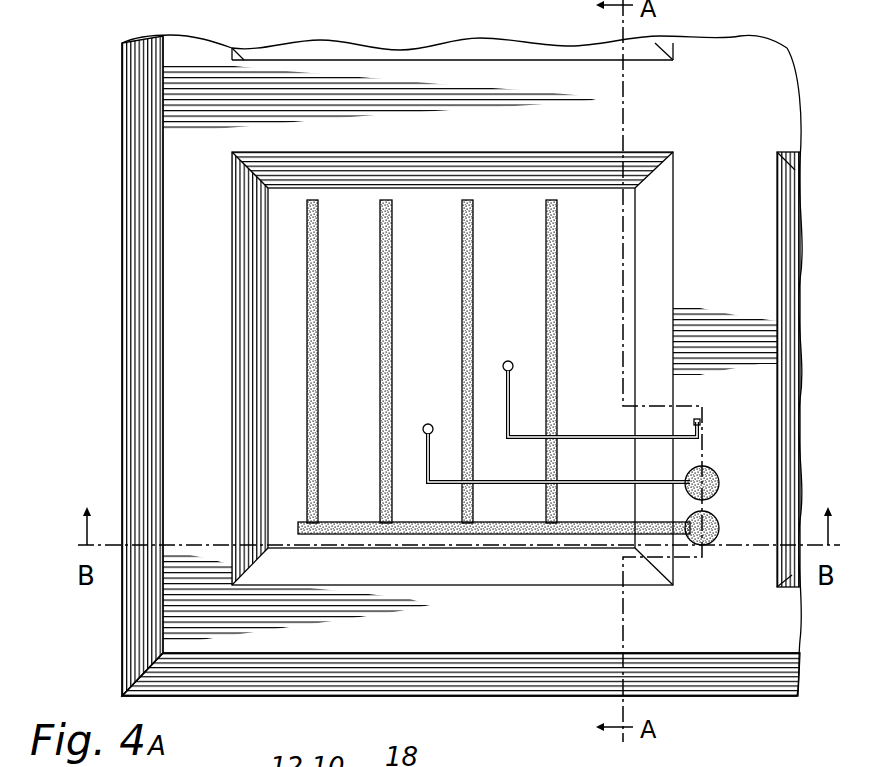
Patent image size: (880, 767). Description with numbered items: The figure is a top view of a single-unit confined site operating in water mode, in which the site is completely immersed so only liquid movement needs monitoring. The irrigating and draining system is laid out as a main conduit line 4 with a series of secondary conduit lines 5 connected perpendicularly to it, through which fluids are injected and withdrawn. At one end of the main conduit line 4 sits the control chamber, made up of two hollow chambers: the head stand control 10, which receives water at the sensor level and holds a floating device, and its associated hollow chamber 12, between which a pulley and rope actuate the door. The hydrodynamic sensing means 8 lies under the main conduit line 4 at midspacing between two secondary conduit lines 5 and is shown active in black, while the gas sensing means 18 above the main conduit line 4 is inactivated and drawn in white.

The main conduit line 4 is at (366, 536).
The secondary conduit lines 5 is at (392, 224).
The hydrodynamic sensing means 8 is at (423, 430).
The head stand control 10 is at (718, 476).
The hollow chamber 12 is at (718, 524).
The gas sensing means 18 is at (513, 368).